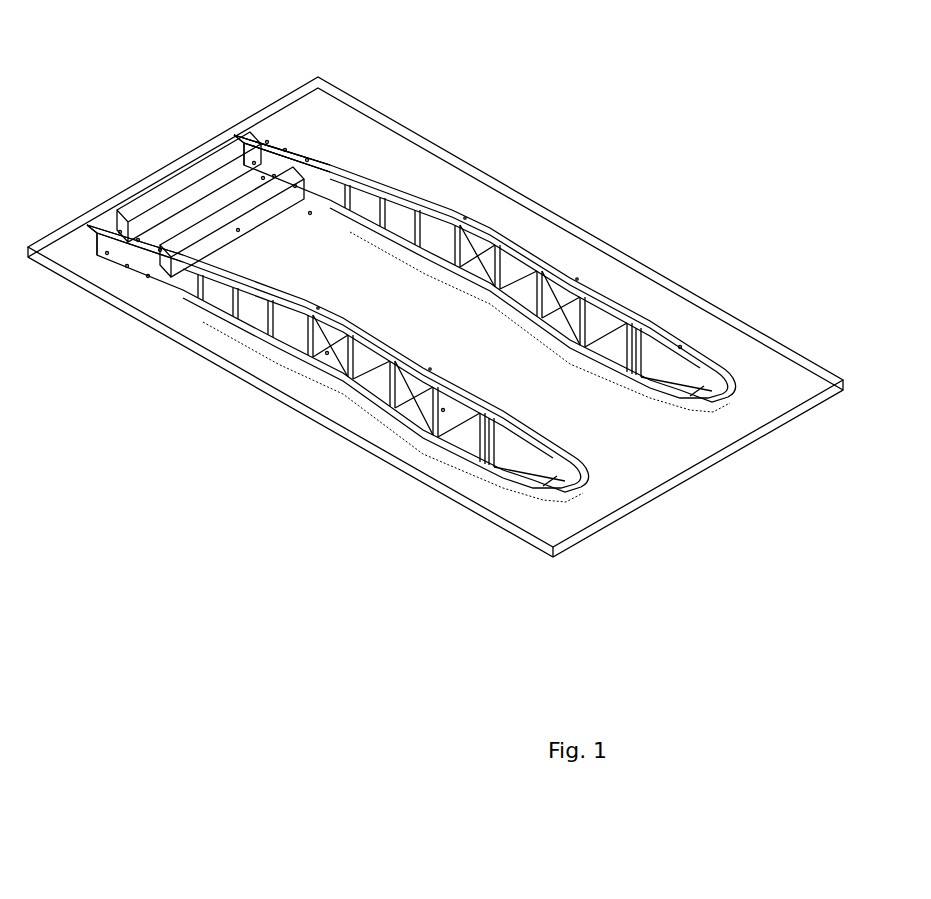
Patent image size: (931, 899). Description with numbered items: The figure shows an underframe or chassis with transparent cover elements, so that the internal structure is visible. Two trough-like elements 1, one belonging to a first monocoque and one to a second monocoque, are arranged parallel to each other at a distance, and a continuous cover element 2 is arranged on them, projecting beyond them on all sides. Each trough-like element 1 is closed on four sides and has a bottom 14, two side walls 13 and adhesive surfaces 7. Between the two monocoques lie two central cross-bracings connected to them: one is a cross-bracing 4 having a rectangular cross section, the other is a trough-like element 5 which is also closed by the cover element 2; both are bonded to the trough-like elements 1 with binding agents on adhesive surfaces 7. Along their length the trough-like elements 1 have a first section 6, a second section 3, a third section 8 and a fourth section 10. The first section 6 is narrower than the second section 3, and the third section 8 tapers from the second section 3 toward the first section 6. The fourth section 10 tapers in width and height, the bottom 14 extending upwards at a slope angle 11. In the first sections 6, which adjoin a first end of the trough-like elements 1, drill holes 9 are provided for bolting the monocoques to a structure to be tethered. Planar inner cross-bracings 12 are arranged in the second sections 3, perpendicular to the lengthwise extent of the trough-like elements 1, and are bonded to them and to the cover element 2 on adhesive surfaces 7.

The trough-like element 1 is at (108, 225).
The cover element 2 is at (543, 237).
The second section 3 is at (550, 288).
The cross-bracing 4 is at (178, 202).
The trough-like element 5 is at (202, 237).
The first section 6 is at (300, 160).
The adhesive surfaces 7 is at (680, 347).
The third section 8 is at (420, 217).
The drill holes 9 is at (267, 143).
The fourth section 10 is at (652, 350).
The slope angle 11 is at (455, 482).
The inner cross-bracings 12 is at (365, 378).
The side walls 13 is at (405, 442).
The bottom 14 is at (525, 472).